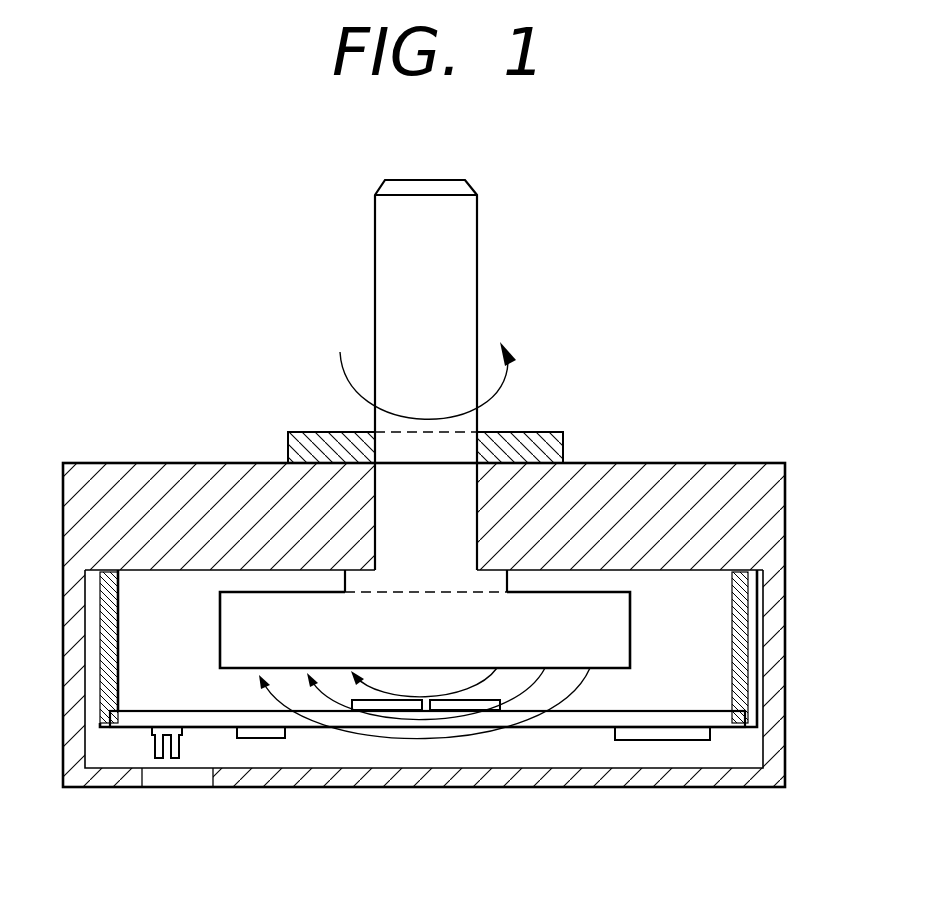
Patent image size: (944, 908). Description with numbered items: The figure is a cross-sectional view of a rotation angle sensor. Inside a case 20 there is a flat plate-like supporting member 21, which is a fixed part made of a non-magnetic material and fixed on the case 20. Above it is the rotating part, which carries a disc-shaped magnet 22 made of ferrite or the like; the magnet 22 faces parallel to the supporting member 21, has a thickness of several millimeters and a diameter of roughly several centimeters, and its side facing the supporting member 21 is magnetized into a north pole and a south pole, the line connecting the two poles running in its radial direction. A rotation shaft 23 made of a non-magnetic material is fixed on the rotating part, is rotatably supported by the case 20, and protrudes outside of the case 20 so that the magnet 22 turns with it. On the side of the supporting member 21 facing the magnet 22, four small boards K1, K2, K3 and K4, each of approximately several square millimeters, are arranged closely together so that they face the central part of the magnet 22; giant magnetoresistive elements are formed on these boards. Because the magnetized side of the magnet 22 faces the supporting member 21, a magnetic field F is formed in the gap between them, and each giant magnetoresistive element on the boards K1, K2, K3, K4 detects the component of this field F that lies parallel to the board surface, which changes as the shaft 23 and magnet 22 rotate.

The case 20 is at (765, 512).
The supporting member 21 is at (670, 717).
The magnet 22 is at (590, 607).
The rotation shaft 23 is at (446, 253).
The magnetic field F is at (590, 668).
The board K1 is at (390, 706).
The board K2 is at (434, 779).
The board K3 is at (456, 706).
The board K4 is at (434, 779).